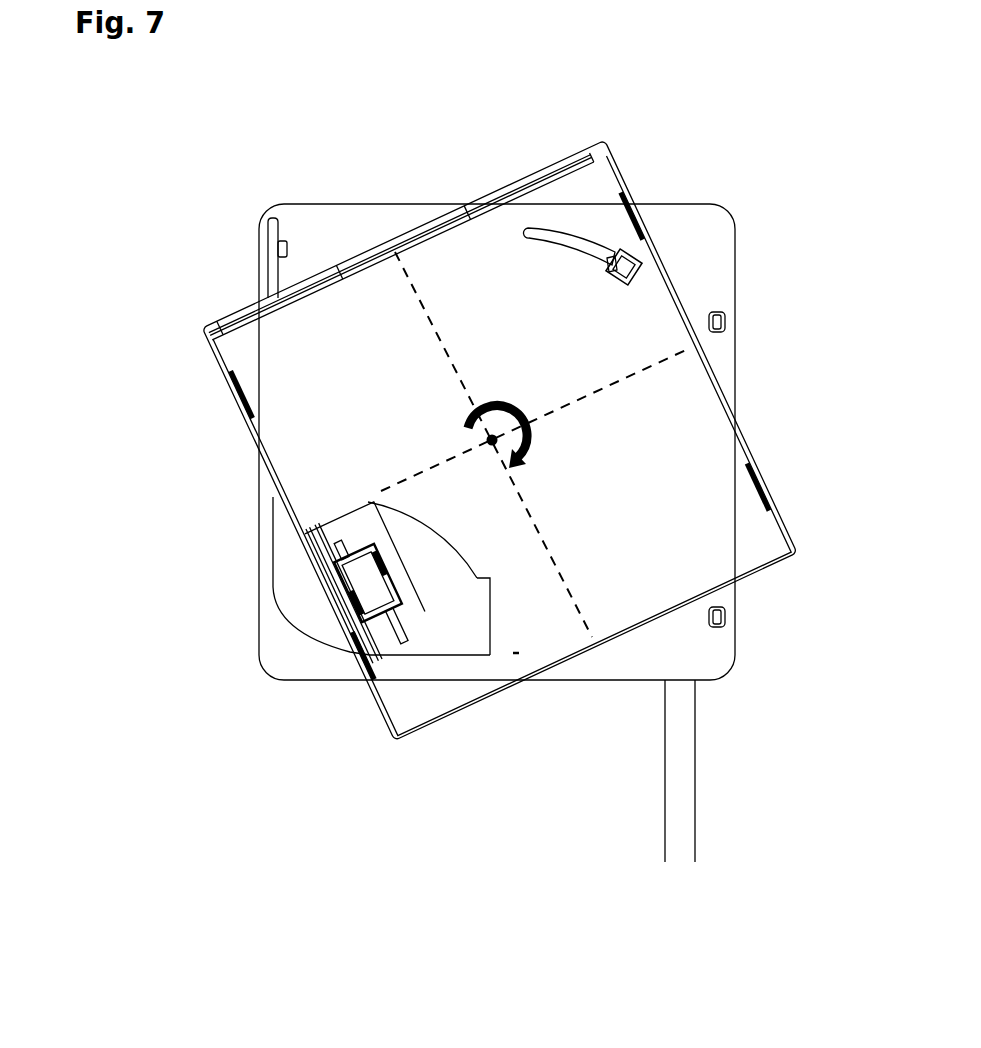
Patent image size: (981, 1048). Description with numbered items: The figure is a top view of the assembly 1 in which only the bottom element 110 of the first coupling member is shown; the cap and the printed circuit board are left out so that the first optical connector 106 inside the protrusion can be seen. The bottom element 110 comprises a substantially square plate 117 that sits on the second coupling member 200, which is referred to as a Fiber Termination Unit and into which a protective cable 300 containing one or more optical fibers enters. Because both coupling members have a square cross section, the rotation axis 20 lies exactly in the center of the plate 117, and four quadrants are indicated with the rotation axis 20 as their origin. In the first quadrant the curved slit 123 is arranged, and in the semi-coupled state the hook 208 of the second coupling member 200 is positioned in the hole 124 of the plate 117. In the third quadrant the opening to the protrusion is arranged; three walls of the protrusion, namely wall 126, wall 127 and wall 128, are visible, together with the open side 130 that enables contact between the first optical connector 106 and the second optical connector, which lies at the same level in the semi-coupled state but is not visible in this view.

The assembly 1 is at (776, 160).
The bottom element 110 is at (203, 333).
The second coupling member 200 is at (463, 511).
The protective cable 300 is at (697, 805).
The rotation axis 20 is at (492, 448).
The plate 117 is at (657, 524).
The curved slit 123 is at (553, 247).
The hole 124 is at (634, 284).
The hook 208 is at (612, 274).
The open side 130 is at (368, 503).
The wall 127 is at (432, 558).
The wall 128 is at (493, 625).
The wall 126 is at (445, 657).
The first optical connector 106 is at (403, 603).